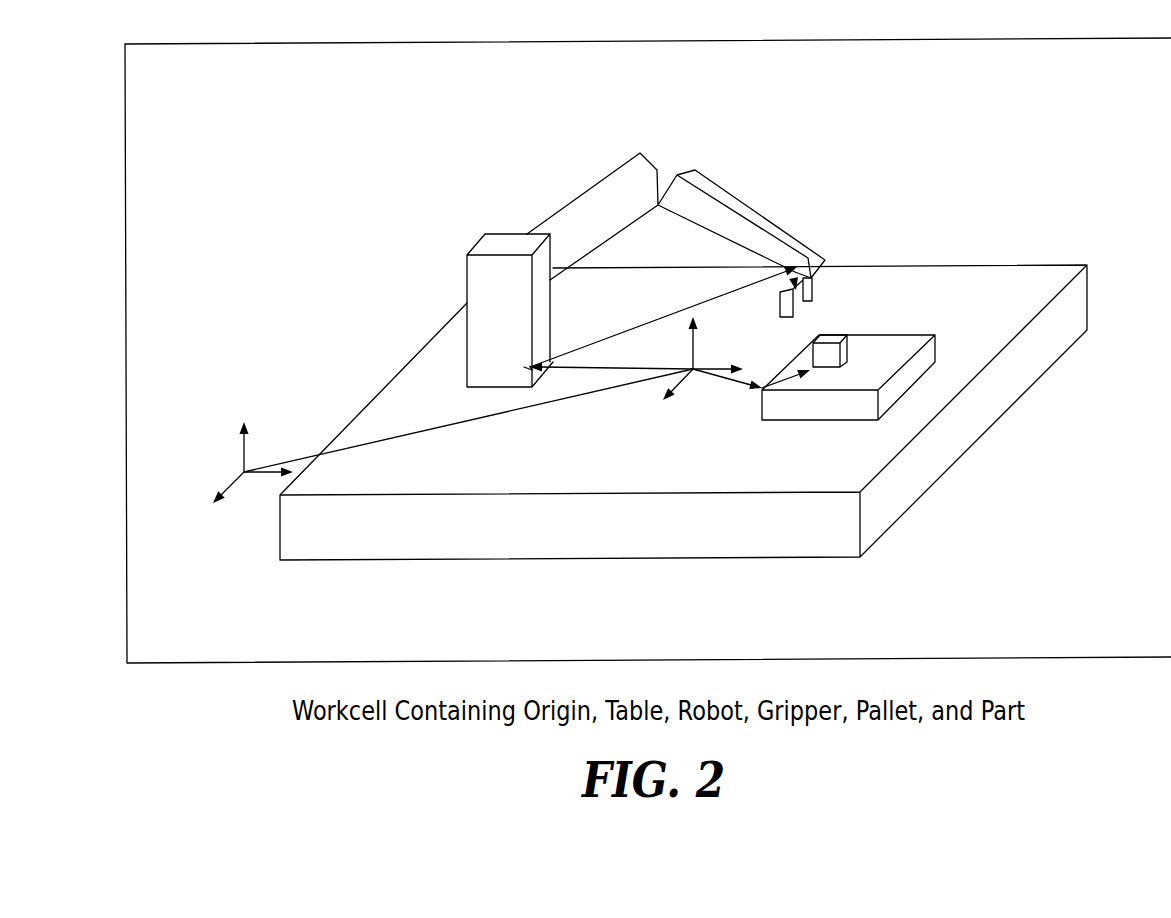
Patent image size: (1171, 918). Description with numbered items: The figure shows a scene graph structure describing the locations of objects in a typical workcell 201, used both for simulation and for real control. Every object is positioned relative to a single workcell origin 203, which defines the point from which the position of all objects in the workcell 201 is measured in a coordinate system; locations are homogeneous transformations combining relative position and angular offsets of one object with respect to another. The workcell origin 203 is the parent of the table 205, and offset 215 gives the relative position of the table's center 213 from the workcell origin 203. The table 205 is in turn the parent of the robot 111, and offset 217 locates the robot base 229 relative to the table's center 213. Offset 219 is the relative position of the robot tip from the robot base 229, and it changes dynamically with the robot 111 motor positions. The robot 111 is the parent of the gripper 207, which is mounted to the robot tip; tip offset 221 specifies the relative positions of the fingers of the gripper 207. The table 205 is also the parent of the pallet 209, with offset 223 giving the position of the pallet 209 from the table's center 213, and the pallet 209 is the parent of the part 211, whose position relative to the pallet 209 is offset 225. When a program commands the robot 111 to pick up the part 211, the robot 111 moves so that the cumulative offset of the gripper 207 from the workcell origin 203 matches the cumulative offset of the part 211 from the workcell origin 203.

The workcell 201 is at (348, 57).
The robot 111 is at (485, 290).
The workcell origin 203 is at (243, 471).
The table 205 is at (940, 450).
The gripper 207 is at (797, 308).
The pallet 209 is at (927, 353).
The part 211 is at (842, 350).
The table's center 213 is at (694, 372).
The offset 215 is at (473, 422).
The offset 217 is at (590, 368).
The offset 219 is at (650, 318).
The tip offset 221 is at (752, 213).
The offset 223 is at (737, 378).
The offset 225 is at (788, 380).
The robot base 229 is at (530, 368).